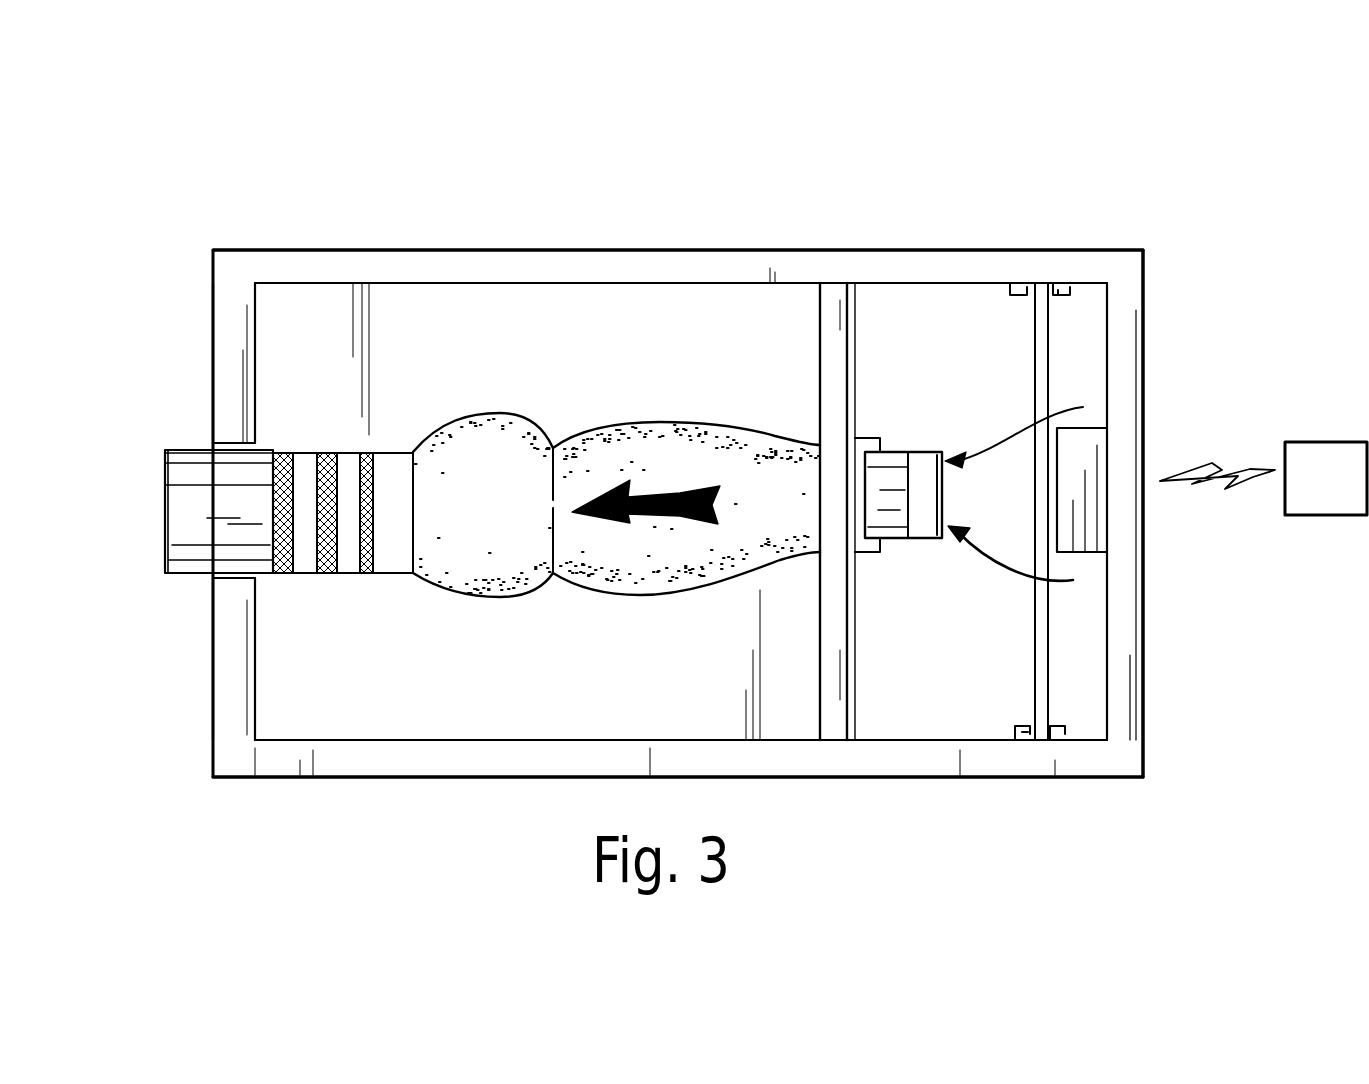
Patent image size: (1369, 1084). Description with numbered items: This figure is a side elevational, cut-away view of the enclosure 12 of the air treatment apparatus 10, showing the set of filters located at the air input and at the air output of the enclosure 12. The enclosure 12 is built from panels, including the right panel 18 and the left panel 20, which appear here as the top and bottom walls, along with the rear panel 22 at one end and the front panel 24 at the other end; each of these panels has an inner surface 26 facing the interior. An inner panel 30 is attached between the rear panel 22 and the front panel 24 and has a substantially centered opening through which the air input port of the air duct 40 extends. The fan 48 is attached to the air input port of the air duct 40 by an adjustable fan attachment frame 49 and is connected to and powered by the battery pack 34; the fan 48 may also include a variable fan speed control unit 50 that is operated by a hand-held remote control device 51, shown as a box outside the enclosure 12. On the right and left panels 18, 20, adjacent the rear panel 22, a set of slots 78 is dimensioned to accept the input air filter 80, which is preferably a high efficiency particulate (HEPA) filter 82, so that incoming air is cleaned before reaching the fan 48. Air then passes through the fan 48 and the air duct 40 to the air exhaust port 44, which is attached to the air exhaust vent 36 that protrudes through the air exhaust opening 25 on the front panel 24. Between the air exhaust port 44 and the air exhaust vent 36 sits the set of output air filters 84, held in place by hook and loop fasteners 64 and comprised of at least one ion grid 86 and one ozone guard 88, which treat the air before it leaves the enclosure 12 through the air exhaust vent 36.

The air purification apparatus 10 is at (1108, 192).
The enclosure 12 is at (278, 292).
The right panel 18 is at (609, 250).
The left panel 20 is at (228, 744).
The rear panel 22 is at (1130, 656).
The front panel 24 is at (223, 330).
The air exhaust opening 25 is at (255, 443).
The inner surface 26 is at (1107, 393).
The inner panel 30 is at (820, 335).
The battery pack 34 is at (1077, 453).
The air exhaust vent 36 is at (207, 523).
The air duct 40 is at (628, 450).
The air exhaust port 44 is at (395, 460).
The fan 48 is at (895, 462).
The adjustable fan attachment frame 49 is at (870, 445).
The variable fan speed control unit 50 is at (1020, 577).
The hand-held remote control device 51 is at (1263, 478).
The hook and loop fasteners 64 is at (283, 575).
The slots 78 is at (1068, 292).
The input air filter 80 is at (1041, 511).
The high efficiency particulate (HEPA) filter 82 is at (1043, 346).
The output air filters 84 is at (326, 513).
The ion grid 86 is at (348, 467).
The ozone guard 88 is at (303, 455).